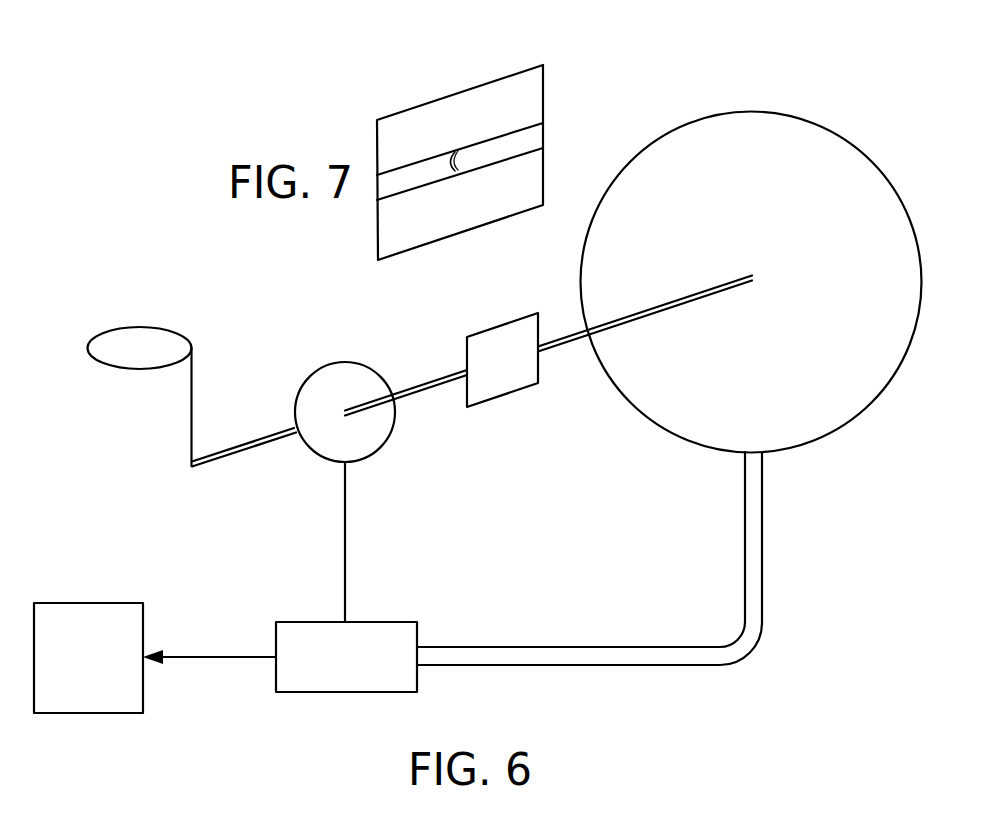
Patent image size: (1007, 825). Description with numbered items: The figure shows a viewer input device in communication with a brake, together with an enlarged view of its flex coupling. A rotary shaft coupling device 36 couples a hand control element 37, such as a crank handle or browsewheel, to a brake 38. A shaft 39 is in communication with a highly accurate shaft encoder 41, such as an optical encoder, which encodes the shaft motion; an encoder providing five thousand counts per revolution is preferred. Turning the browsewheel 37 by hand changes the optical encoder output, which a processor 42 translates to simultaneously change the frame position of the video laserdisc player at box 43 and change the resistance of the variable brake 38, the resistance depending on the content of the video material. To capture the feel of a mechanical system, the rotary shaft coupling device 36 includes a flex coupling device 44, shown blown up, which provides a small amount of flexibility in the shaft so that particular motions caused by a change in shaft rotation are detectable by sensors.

In FIG. 6, the rotary shaft coupling device 36 is at (171, 272).
In FIG. 6, the hand control element 37 is at (108, 327).
In FIG. 6, the brake 38 is at (813, 122).
In FIG. 6, the shaft 39 is at (247, 456).
In FIG. 6, the shaft encoder 41 is at (345, 362).
In FIG. 6, the processor 42 is at (385, 622).
In FIG. 6, the change frame position box 43 is at (87, 603).
In FIG. 7, the flex coupling device 44 is at (556, 90).
In FIG. 6, the flex coupling device 44 is at (500, 397).